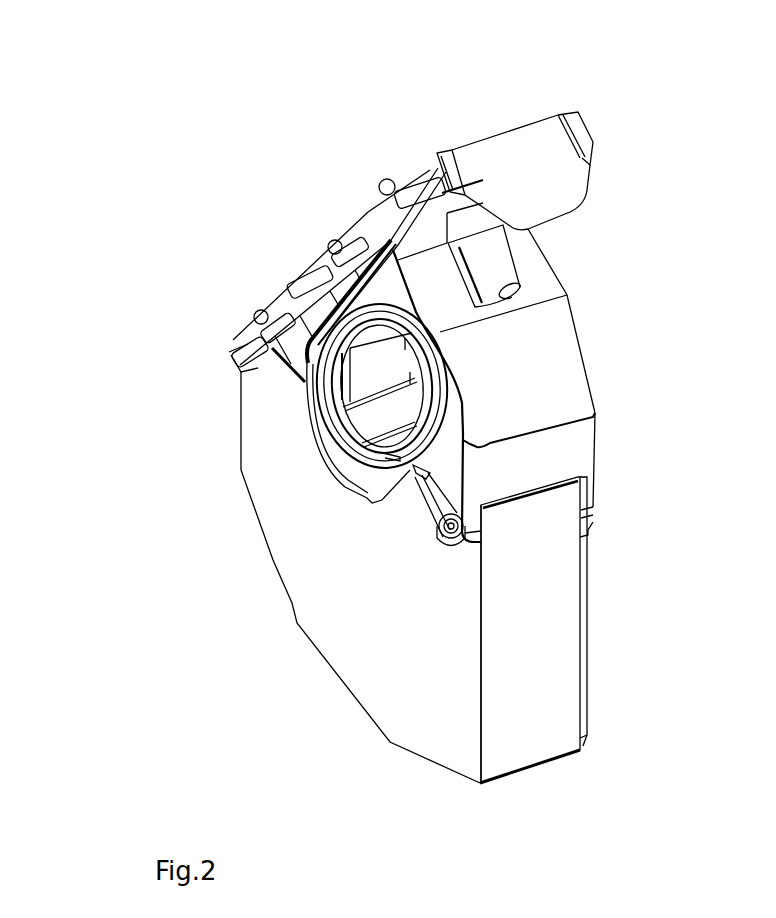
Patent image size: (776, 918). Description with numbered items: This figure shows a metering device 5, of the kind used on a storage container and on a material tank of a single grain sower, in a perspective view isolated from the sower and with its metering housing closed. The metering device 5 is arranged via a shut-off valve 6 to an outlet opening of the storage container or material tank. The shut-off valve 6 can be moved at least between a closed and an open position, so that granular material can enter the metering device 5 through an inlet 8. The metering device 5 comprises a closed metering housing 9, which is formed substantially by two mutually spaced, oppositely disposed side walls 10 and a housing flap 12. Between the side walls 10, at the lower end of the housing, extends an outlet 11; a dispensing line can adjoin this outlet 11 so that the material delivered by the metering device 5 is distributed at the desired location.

The metering device 5 is at (633, 293).
The shut-off valve 6 is at (530, 140).
The inlet 8 is at (330, 247).
The metering housing 9 is at (600, 450).
The side walls 10 is at (272, 510).
The outlet 11 is at (502, 783).
The housing flap 12 is at (568, 367).